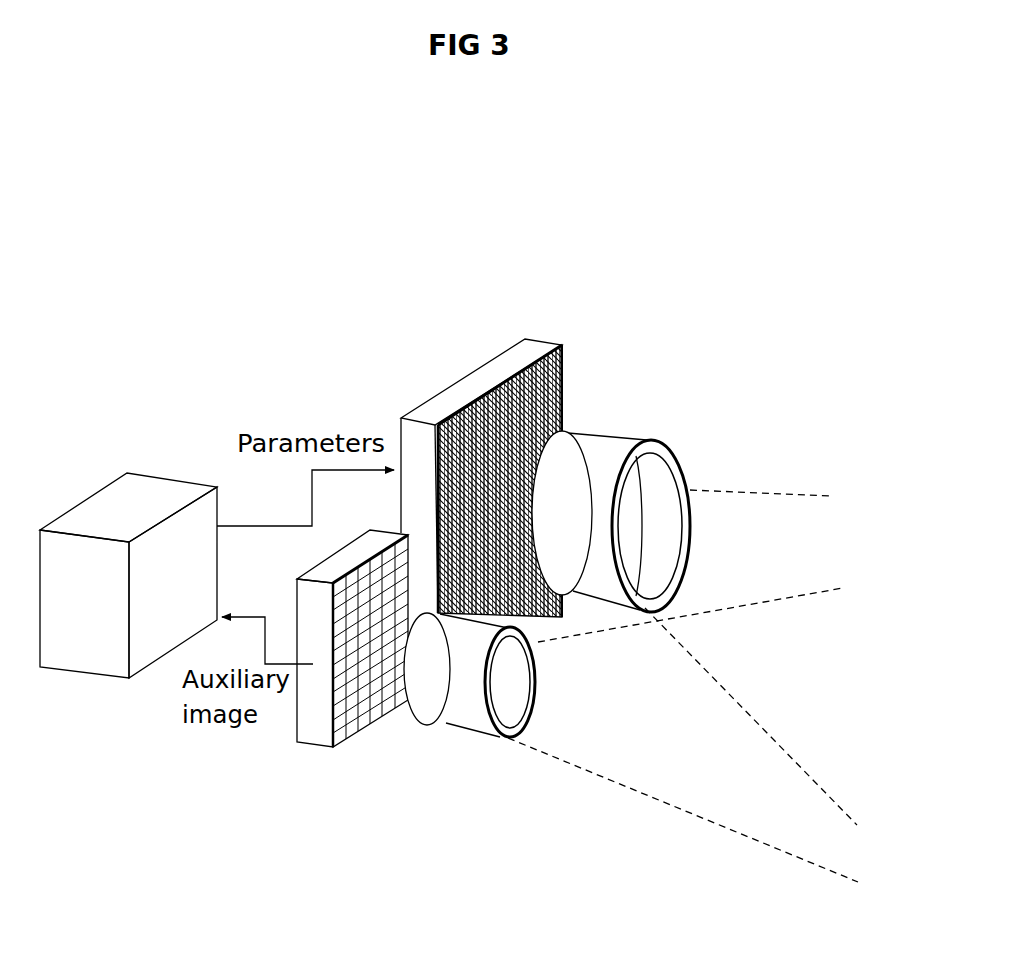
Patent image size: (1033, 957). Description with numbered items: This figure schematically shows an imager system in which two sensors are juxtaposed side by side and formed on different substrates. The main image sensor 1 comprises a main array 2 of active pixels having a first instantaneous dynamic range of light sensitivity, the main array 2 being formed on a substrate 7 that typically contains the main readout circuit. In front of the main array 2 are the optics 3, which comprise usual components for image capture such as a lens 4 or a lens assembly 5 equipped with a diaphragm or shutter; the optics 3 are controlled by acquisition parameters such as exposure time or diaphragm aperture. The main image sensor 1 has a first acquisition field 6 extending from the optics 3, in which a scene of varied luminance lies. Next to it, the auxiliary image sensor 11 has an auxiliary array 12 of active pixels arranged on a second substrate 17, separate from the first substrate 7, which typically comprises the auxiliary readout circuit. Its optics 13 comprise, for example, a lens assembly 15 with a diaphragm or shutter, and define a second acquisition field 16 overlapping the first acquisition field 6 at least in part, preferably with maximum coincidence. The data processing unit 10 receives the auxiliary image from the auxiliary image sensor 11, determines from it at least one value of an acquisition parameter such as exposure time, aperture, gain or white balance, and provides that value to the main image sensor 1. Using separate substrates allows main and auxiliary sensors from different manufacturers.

The main image sensor 1 is at (534, 444).
The main array 2 is at (562, 398).
The optics 3 is at (624, 496).
The lens 4 is at (592, 450).
The lens assembly 5 is at (673, 457).
The first acquisition field 6 is at (762, 515).
The substrate 7 is at (433, 407).
The data processing unit 10 is at (115, 503).
The auxiliary image sensor 11 is at (427, 714).
The auxiliary array 12 is at (353, 713).
The optics 13 is at (509, 755).
The lens assembly 15 is at (523, 670).
The second acquisition field 16 is at (730, 800).
The substrate 17 is at (310, 738).